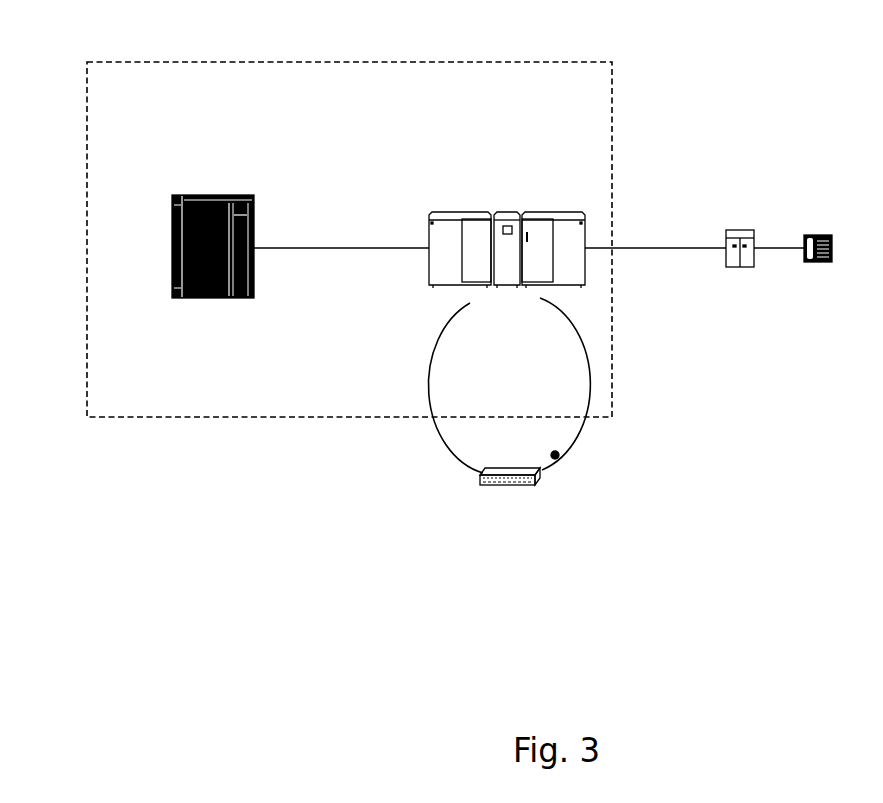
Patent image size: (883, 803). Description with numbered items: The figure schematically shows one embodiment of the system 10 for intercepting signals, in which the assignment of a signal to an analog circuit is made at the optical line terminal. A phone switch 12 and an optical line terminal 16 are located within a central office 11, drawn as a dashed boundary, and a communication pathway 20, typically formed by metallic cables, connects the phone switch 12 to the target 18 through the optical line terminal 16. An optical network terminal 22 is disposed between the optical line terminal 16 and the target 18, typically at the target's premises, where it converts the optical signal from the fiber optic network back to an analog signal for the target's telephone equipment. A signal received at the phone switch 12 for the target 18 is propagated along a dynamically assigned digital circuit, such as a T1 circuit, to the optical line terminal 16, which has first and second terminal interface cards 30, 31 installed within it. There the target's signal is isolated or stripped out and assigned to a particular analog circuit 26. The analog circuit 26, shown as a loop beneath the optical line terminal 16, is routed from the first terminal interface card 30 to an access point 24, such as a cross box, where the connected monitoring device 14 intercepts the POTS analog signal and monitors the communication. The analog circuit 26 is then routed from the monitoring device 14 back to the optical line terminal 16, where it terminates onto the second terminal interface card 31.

The system 10 is at (212, 456).
The central office 11 is at (613, 96).
The phone switch 12 is at (187, 197).
The monitoring device 14 is at (523, 485).
The optical line terminal 16 is at (486, 224).
The target 18 is at (820, 238).
The communication pathway 20 is at (360, 234).
The optical network terminal 22 is at (743, 230).
The access point 24 is at (559, 457).
The analog circuit 26 is at (438, 362).
The first terminal interface card 30 is at (537, 228).
The second terminal interface card 31 is at (480, 227).